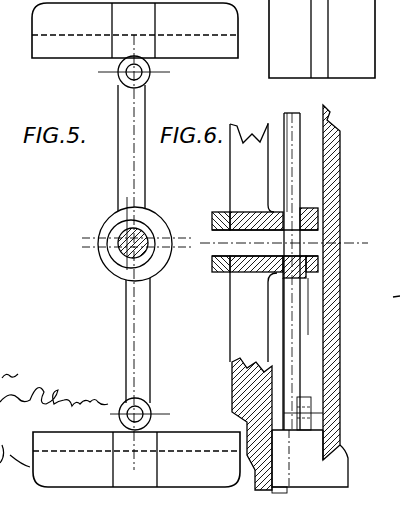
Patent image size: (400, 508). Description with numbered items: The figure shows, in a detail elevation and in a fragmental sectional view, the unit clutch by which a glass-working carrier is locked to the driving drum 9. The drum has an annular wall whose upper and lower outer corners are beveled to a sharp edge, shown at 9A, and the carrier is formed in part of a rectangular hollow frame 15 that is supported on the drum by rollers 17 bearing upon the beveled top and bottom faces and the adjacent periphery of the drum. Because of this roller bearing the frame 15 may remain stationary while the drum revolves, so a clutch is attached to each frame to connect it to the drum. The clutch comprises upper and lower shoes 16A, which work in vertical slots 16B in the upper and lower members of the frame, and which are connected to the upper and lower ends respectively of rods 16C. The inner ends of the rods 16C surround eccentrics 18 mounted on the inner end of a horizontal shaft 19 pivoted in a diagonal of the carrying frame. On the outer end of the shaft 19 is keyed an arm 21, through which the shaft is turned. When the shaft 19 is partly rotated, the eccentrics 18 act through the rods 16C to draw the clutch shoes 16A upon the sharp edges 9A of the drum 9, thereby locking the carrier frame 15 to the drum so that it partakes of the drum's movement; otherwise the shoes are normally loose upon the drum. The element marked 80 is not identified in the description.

In FIG. 6, the driving drum 9 is at (330, 225).
In FIG. 6, the beveled sharp edge of the drum 9A is at (346, 450).
In FIG. 6, the rectangular hollow frame 15 is at (253, 300).
In FIG. 5, the clutch shoes 16A is at (188, 47).
In FIG. 6, the clutch shoes 16A is at (310, 440).
In FIG. 6, the vertical slots 16B is at (277, 387).
In FIG. 5, the rods 16C is at (128, 170).
In FIG. 6, the rods 16C is at (293, 170).
In FIG. 6, the rollers 17 is at (386, 304).
In FIG. 5, the eccentrics 18 is at (167, 250).
In FIG. 5, the horizontal shaft 19 is at (140, 240).
In FIG. 6, the horizontal shaft 19 is at (232, 215).
In FIG. 6, the arm 21 is at (217, 271).
In FIG. 6, the cross head block 80 is at (353, 38).